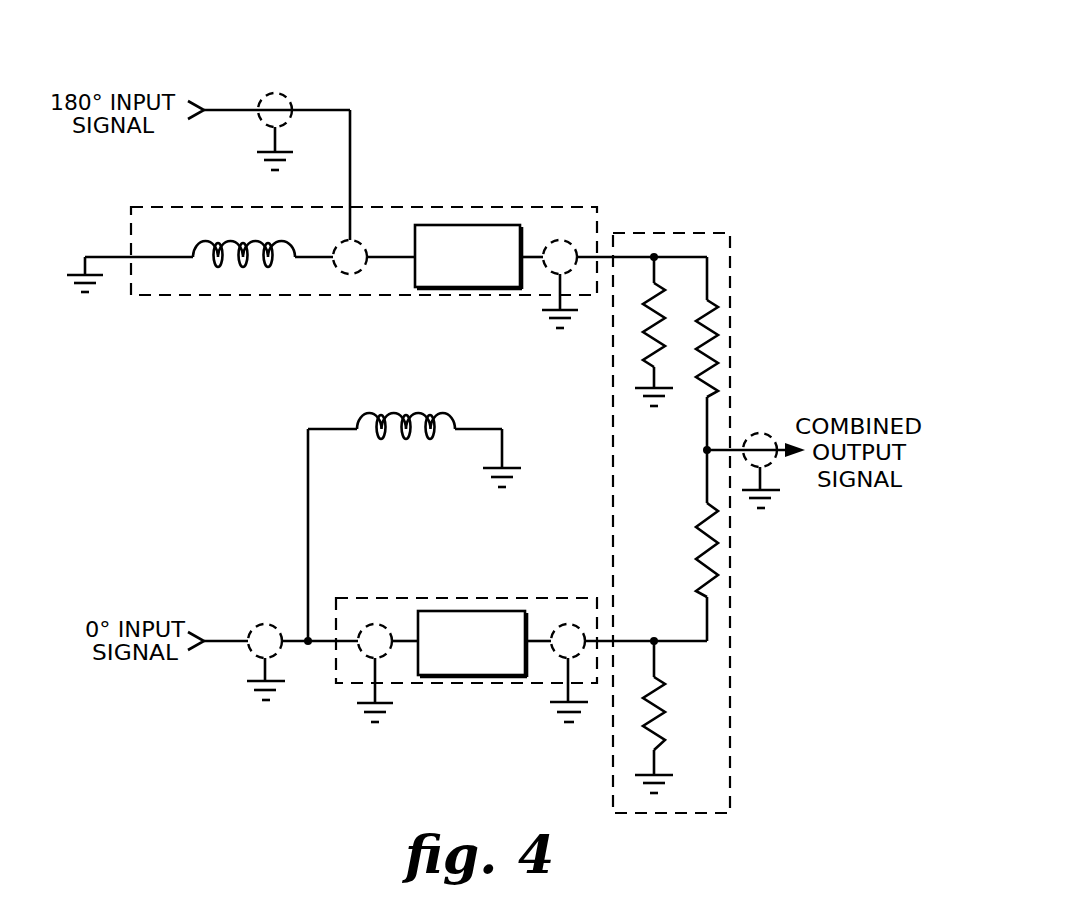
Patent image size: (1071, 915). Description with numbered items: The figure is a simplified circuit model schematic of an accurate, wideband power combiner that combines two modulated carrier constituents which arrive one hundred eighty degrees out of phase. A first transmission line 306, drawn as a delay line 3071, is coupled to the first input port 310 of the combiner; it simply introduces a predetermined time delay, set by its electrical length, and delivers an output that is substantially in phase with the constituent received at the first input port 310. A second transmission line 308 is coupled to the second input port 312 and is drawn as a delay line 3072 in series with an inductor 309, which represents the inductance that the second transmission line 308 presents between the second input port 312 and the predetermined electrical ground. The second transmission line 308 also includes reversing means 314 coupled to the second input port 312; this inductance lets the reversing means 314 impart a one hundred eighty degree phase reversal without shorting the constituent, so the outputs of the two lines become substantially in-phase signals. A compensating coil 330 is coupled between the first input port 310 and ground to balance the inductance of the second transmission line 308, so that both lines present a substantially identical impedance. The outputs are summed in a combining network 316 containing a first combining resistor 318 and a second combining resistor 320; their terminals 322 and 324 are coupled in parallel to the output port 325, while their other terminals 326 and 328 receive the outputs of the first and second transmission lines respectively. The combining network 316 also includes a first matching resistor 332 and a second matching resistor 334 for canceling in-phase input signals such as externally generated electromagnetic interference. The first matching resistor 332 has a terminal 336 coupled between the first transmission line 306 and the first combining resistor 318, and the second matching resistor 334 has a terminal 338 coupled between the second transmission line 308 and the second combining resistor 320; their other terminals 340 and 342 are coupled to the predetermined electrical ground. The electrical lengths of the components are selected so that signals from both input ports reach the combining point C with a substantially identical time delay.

The first transmission line 306 is at (577, 598).
The delay line 3071 is at (440, 611).
The delay line 3072 is at (465, 225).
The second transmission line 308 is at (585, 207).
The inductor 309 is at (218, 264).
The first input port 310 is at (234, 641).
The second input port 312 is at (218, 110).
The reversing means 314 is at (350, 274).
The combining network 316 is at (730, 243).
The first combining resistor 318 is at (712, 558).
The second combining resistor 320 is at (712, 330).
The terminal 322 is at (707, 420).
The terminal 324 is at (707, 478).
The output port 325 is at (746, 440).
The terminal 326 is at (707, 618).
The terminal 328 is at (707, 272).
The compensating coil 330 is at (445, 413).
The first matching resistor 332 is at (654, 716).
The second matching resistor 334 is at (654, 320).
The terminal 336 is at (654, 660).
The terminal 338 is at (654, 268).
The terminal 340 is at (654, 762).
The terminal 342 is at (654, 370).
The combining point C is at (707, 455).